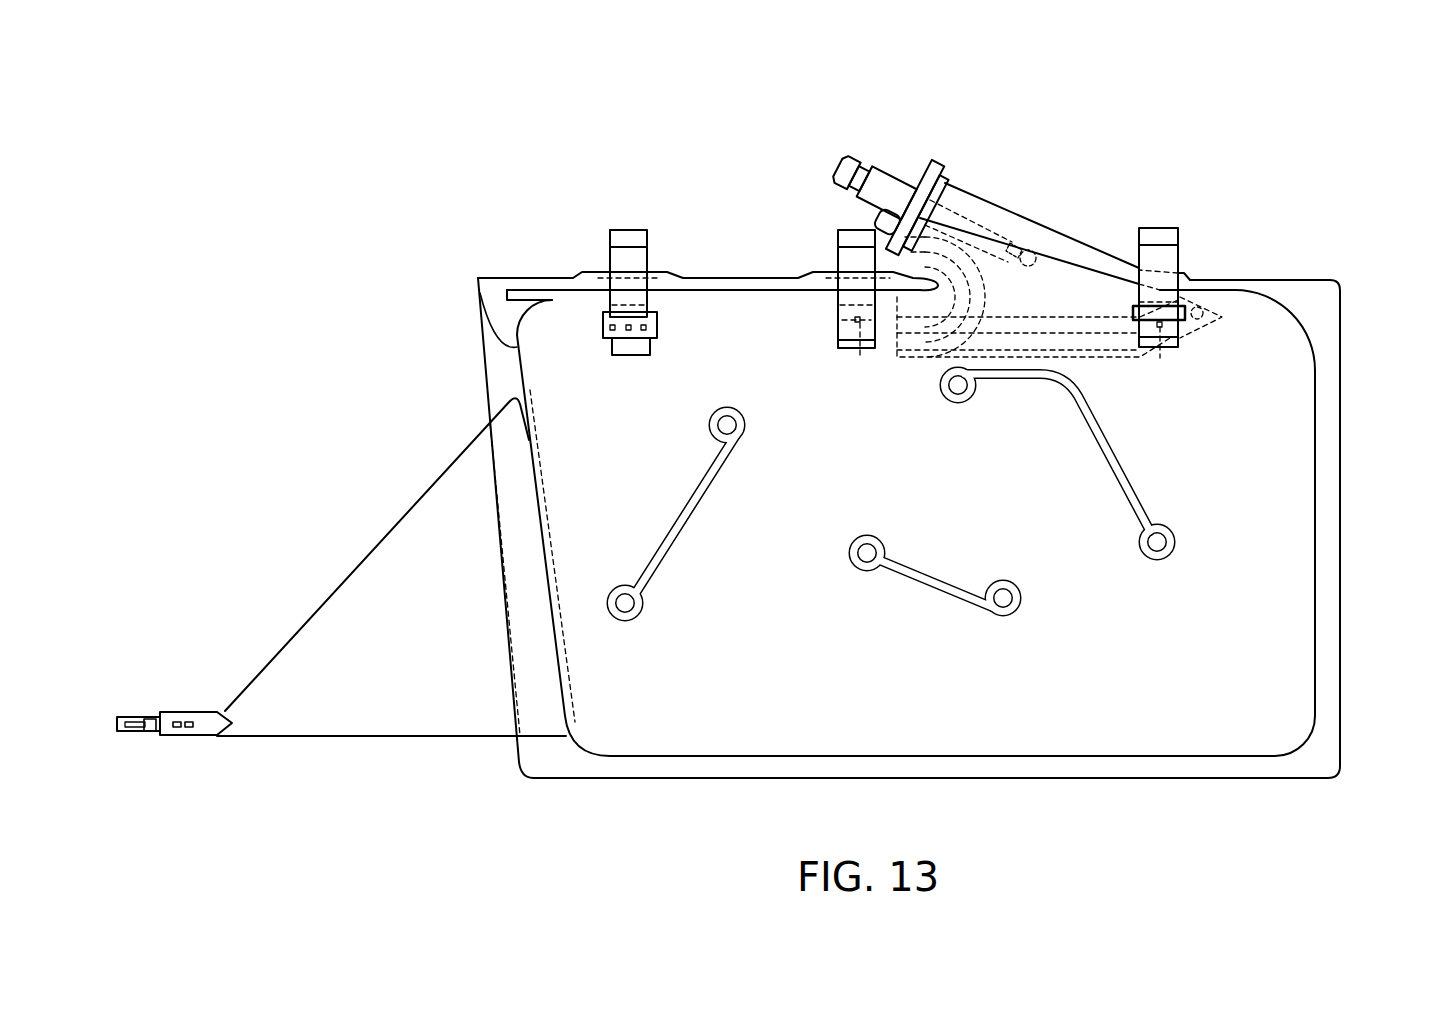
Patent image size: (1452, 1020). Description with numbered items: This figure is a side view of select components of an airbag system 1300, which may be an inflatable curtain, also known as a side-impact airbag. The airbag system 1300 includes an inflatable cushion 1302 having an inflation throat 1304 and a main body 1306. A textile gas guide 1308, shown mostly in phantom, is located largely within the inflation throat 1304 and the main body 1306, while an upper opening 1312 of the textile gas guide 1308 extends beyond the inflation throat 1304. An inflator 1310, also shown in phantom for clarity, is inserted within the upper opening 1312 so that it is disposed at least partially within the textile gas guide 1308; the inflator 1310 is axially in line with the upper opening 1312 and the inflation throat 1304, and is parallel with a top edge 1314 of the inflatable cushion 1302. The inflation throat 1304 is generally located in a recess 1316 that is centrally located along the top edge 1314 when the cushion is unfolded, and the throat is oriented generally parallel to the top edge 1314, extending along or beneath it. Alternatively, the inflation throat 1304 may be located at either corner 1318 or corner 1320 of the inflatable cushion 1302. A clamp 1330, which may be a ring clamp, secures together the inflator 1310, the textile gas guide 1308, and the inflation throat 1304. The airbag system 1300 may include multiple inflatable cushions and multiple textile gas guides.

The airbag system 1300 is at (1233, 244).
The inflatable cushion 1302 is at (1210, 612).
The inflation throat 1304 is at (937, 243).
The main body 1306 is at (962, 690).
The textile gas guide 1308 is at (1080, 267).
The inflator 1310 is at (988, 207).
The upper opening 1312 is at (858, 212).
The top edge 1314 is at (585, 270).
The recess 1316 is at (905, 268).
The corner 1318 is at (482, 305).
The corner 1320 is at (1305, 337).
The clamp 1330 is at (942, 165).